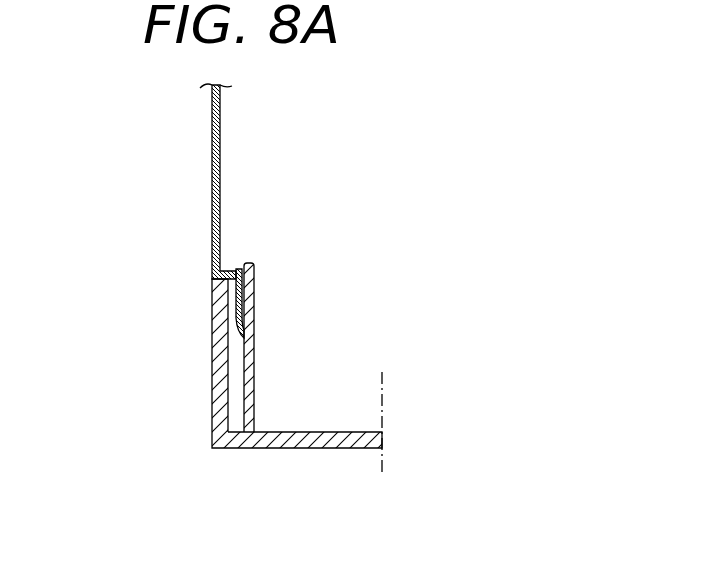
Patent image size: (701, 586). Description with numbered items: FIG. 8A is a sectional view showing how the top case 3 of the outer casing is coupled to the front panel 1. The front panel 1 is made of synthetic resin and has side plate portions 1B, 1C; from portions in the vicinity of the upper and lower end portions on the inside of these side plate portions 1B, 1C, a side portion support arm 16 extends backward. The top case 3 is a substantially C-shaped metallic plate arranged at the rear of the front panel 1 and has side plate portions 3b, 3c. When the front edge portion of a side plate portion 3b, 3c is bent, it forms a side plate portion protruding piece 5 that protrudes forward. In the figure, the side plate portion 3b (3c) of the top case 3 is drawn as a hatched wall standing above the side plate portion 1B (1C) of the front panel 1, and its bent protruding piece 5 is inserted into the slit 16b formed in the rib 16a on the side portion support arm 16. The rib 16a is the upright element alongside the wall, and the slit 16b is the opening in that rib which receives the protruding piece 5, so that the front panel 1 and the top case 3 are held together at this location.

The front panel 1 is at (298, 456).
The side plate portion 1B is at (212, 395).
The side plate portion 1C is at (220, 355).
The top case 3 is at (197, 152).
The side plate portion 3b is at (212, 207).
The side plate portion 3c is at (218, 181).
The side plate portion protruding piece 5 is at (232, 286).
The side portion support arm 16 is at (257, 288).
The rib 16a is at (243, 268).
The slit 16b is at (255, 340).